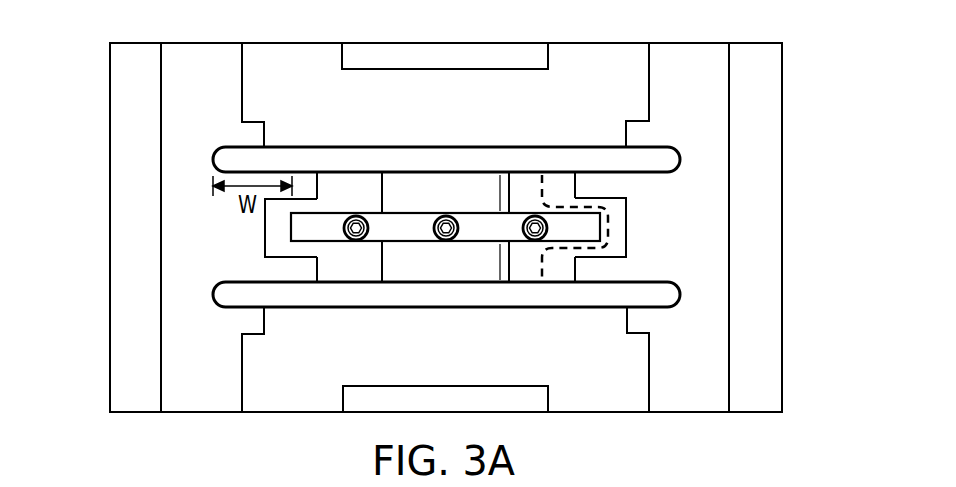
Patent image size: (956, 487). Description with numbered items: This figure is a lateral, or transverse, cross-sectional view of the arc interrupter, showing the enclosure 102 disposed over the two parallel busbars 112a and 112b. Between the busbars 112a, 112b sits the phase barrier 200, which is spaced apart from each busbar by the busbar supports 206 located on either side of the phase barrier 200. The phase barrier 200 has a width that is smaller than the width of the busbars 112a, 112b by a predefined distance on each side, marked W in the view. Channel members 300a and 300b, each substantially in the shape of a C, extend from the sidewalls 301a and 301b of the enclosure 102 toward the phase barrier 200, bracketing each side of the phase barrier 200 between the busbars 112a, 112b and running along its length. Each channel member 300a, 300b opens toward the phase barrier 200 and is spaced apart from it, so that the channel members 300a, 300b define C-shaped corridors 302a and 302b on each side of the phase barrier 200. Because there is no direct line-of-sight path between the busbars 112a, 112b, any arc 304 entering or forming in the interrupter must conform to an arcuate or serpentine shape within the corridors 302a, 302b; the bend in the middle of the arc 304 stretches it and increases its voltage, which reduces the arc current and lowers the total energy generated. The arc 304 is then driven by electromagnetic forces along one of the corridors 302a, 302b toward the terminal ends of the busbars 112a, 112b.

The enclosure 102 is at (108, 230).
The sidewall 301a is at (161, 282).
The sidewall 301b is at (733, 282).
The busbar 112a is at (225, 147).
The busbar 112b is at (225, 308).
The phase barrier 200 is at (347, 213).
The busbar support 206 is at (445, 183).
The channel member 300a is at (252, 267).
The channel member 300b is at (640, 268).
The C-shaped corridor 302a is at (266, 231).
The C-shaped corridor 302b is at (625, 229).
The arc 304 is at (610, 213).